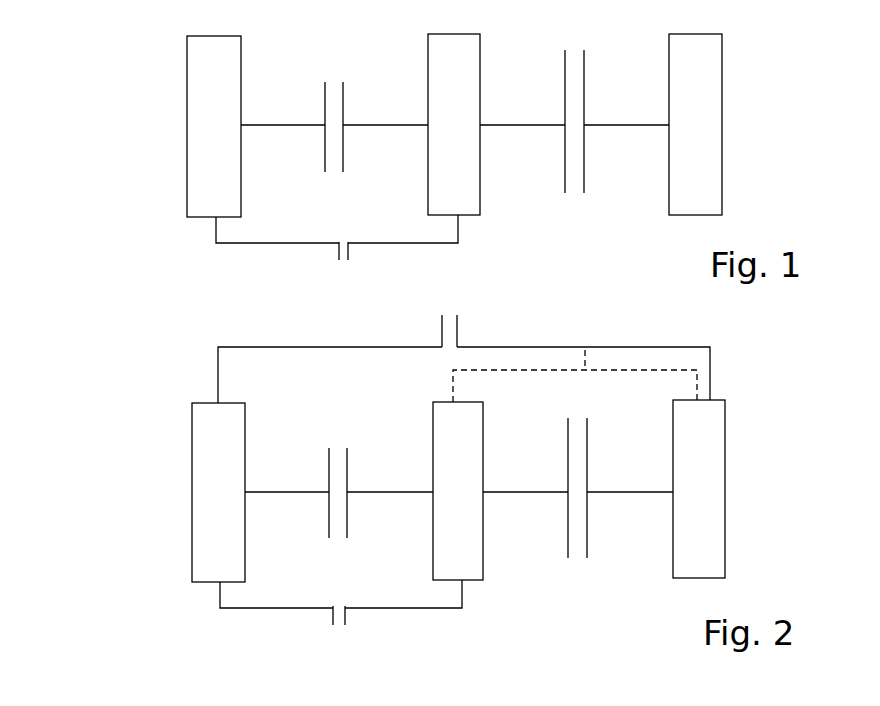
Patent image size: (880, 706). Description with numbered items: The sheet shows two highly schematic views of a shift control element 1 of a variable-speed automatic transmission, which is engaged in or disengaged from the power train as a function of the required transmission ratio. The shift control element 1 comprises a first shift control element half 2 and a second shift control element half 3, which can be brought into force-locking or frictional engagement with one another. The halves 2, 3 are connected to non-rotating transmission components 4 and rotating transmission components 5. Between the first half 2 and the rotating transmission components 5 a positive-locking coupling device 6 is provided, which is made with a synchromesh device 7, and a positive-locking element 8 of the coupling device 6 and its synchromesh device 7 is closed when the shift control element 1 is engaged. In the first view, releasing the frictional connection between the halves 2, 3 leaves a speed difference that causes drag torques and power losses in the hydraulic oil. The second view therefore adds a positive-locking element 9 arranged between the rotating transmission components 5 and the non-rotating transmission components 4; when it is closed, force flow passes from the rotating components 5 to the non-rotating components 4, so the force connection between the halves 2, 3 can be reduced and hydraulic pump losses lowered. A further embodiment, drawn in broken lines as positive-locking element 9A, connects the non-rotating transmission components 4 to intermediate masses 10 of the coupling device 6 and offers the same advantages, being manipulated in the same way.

In FIG. 1, the shift control element 1 is at (150, 85).
In FIG. 2, the shift control element 1 is at (152, 450).
In FIG. 1, the first shift control element half 2 is at (585, 75).
In FIG. 2, the first shift control element half 2 is at (590, 447).
In FIG. 1, the second shift control element half 3 is at (563, 70).
In FIG. 2, the second shift control element half 3 is at (565, 455).
In FIG. 1, the non-rotating transmission components 4 is at (710, 87).
In FIG. 2, the non-rotating transmission components 4 is at (713, 437).
In FIG. 1, the rotating transmission components 5 is at (210, 176).
In FIG. 2, the rotating transmission components 5 is at (197, 552).
In FIG. 1, the positive-locking coupling device 6 is at (235, 254).
In FIG. 2, the positive-locking coupling device 6 is at (225, 621).
In FIG. 1, the synchromesh device 7 is at (318, 79).
In FIG. 2, the synchromesh device 7 is at (320, 441).
In FIG. 1, the positive-locking element 8 is at (337, 250).
In FIG. 2, the positive-locking element 8 is at (332, 617).
In FIG. 2, the positive-locking element 9 is at (372, 345).
In FIG. 2, the positive-locking element 9A is at (615, 368).
In FIG. 1, the intermediate masses 10 is at (467, 193).
In FIG. 2, the intermediate masses 10 is at (468, 542).